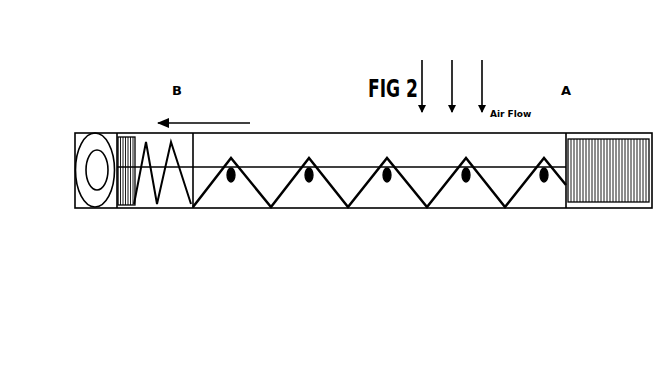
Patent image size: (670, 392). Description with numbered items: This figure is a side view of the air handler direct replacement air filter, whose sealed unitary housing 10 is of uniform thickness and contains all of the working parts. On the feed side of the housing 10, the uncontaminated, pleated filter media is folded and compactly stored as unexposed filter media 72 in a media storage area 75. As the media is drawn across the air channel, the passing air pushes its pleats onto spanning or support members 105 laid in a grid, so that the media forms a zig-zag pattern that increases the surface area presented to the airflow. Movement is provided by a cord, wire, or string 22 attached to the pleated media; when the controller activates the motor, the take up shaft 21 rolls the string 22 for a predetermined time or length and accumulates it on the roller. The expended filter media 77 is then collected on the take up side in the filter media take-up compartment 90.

The unitary housing 10 is at (320, 210).
The take up shaft 21 is at (93, 165).
The string 22 is at (265, 165).
The unexposed filter media 72 is at (599, 165).
The media storage area 75 is at (652, 217).
The expended filter media 77 is at (125, 142).
The filter media take-up compartment 90 is at (118, 222).
The spanning or support members 105 is at (388, 185).